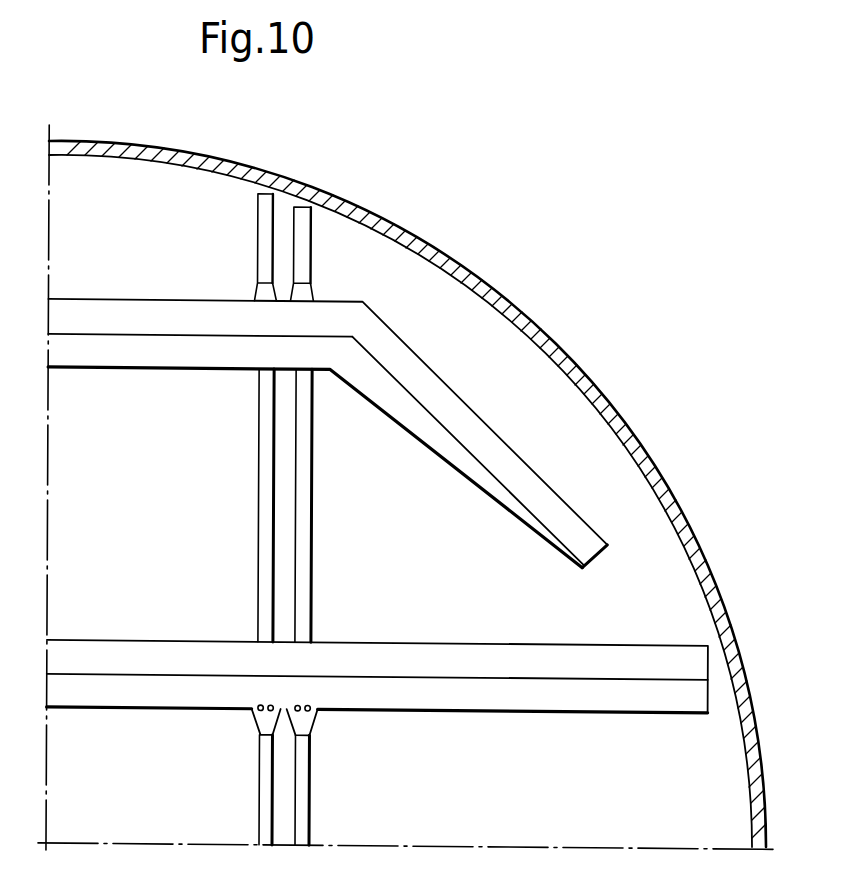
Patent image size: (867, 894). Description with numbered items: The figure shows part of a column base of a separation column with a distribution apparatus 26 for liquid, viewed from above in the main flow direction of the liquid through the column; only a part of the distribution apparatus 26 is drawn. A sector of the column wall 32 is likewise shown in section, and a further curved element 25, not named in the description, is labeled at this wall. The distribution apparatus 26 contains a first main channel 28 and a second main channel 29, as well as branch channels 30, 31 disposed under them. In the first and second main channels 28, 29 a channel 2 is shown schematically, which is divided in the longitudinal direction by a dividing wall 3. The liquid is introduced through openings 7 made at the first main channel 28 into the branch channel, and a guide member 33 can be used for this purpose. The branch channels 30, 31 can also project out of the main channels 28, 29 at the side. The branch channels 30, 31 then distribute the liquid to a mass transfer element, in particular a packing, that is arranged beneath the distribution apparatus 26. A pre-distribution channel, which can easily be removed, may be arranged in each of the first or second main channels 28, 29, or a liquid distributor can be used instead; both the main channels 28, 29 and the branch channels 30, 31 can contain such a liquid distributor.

The channel 2 is at (151, 355).
The dividing wall 3 is at (127, 333).
The openings 7 is at (255, 712).
The housing shell 25 is at (542, 327).
The distribution apparatus 26 is at (342, 751).
The first main channel 28 is at (163, 655).
The second main channel 29 is at (198, 312).
The branch channel 30 is at (265, 473).
The branch channel 31 is at (302, 473).
The column wall 32 is at (381, 226).
The guide member 33 is at (267, 723).